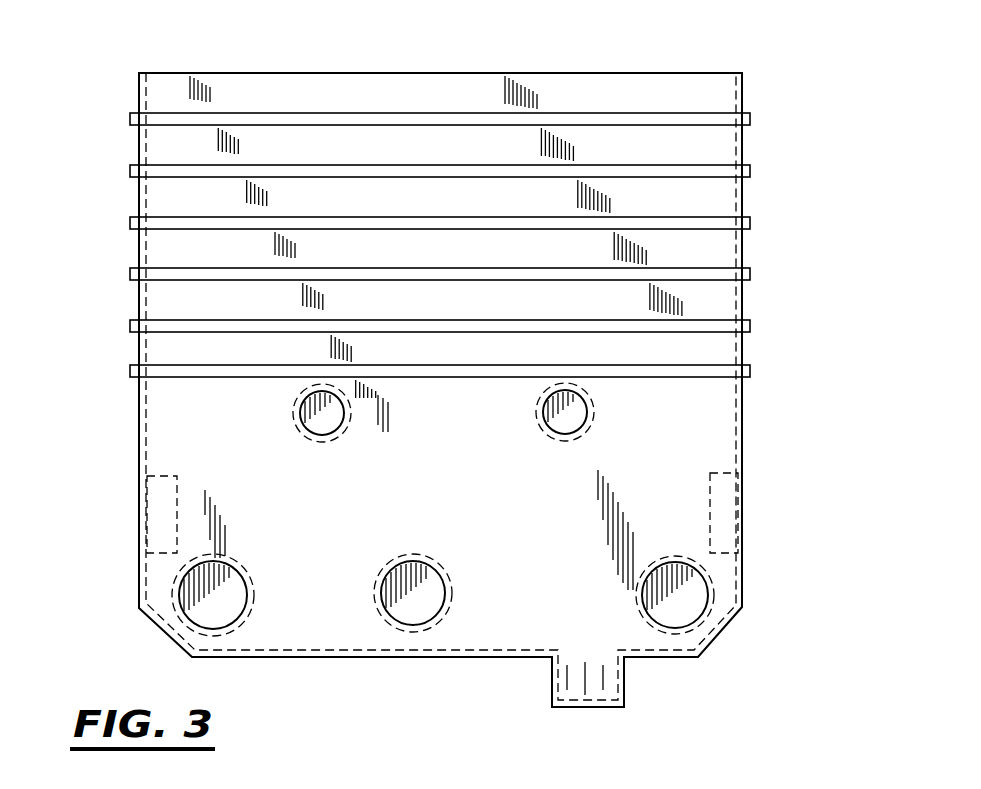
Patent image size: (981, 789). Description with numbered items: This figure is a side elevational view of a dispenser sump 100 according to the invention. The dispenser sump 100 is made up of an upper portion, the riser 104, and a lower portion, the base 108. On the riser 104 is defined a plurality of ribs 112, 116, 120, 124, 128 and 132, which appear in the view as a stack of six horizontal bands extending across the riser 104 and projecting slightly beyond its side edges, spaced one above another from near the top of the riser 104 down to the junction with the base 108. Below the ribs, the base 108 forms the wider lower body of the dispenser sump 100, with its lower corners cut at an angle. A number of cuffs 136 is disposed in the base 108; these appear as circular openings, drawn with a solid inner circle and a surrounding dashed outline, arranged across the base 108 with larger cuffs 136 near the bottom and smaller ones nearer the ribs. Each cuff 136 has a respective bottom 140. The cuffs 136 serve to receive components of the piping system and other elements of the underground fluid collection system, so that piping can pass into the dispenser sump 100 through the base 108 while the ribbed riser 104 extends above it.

The dispenser sump 100 is at (752, 93).
The riser 104 is at (745, 143).
The base 108 is at (157, 434).
The rib 112 is at (130, 118).
The rib 116 is at (130, 171).
The rib 120 is at (130, 223).
The rib 124 is at (130, 274).
The rib 128 is at (130, 326).
The rib 132 is at (130, 371).
The cuff 136 is at (238, 623).
The bottom 140 is at (560, 412).